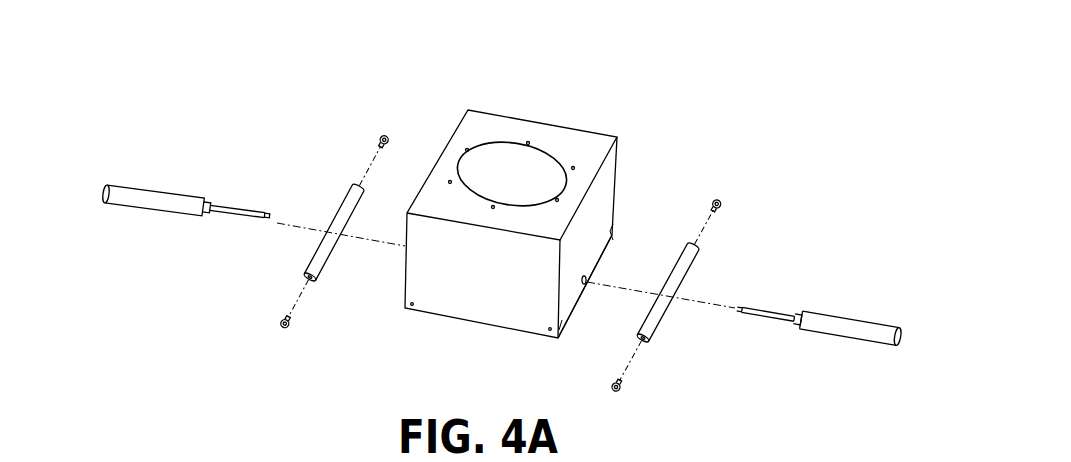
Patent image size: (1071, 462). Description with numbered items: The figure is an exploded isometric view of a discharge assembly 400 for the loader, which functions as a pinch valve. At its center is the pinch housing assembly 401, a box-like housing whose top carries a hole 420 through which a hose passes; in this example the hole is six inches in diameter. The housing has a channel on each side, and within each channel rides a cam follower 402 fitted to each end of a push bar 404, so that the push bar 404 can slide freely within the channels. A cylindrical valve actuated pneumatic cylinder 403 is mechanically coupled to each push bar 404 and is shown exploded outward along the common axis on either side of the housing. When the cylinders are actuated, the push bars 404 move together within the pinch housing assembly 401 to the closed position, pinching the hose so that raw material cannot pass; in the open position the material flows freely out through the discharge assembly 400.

The tool assembly 400 is at (782, 99).
The pinch housing assembly 401 is at (453, 134).
The cam follower 402 is at (387, 135).
The cylindrical valve actuated pneumatic cylinder 403 is at (171, 191).
The push bar 404 is at (341, 203).
The hole 420 is at (512, 180).